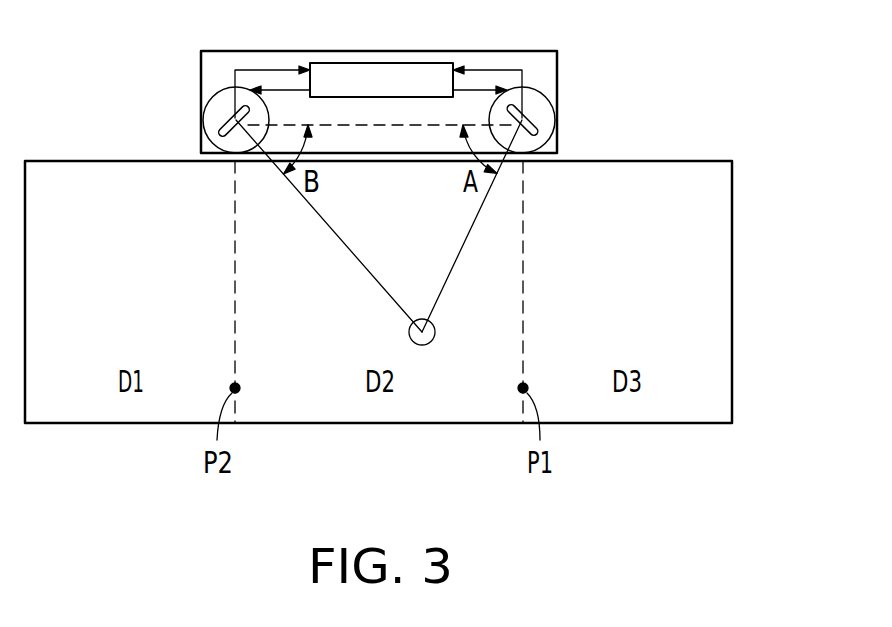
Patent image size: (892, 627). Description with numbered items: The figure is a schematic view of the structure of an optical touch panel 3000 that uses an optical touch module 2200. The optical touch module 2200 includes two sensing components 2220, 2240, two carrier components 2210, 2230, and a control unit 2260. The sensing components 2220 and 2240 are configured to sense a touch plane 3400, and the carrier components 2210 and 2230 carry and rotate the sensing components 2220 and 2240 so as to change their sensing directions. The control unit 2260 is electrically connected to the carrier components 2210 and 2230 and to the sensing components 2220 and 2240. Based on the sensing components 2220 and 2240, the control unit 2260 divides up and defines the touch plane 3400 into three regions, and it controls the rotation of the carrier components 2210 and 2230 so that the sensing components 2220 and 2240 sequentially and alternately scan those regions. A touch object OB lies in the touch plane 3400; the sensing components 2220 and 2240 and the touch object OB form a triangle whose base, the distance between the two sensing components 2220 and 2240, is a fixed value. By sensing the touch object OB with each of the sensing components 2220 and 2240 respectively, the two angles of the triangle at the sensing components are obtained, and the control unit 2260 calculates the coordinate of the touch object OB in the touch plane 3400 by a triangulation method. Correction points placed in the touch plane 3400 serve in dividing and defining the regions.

The optical touch module 2200 is at (558, 72).
The carrier component 2210 is at (556, 137).
The sensing component 2220 is at (538, 117).
The carrier component 2230 is at (207, 130).
The sensing component 2240 is at (222, 112).
The control unit 2260 is at (408, 63).
The touch plane 3400 is at (733, 271).
The optical touch panel 3000 is at (795, 513).
The touch object OB is at (436, 332).